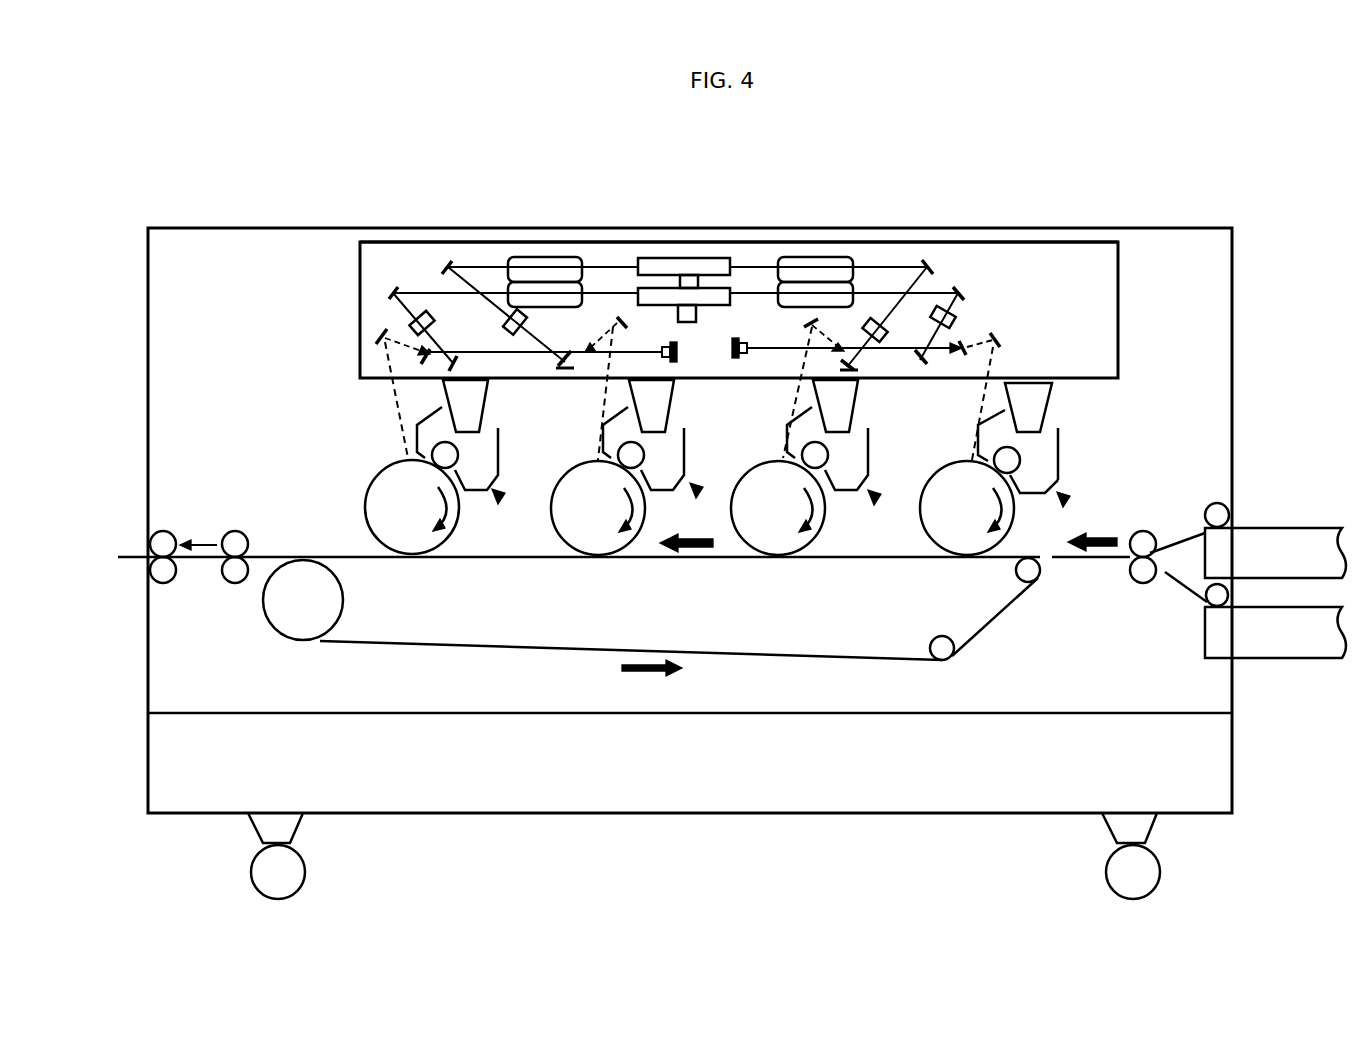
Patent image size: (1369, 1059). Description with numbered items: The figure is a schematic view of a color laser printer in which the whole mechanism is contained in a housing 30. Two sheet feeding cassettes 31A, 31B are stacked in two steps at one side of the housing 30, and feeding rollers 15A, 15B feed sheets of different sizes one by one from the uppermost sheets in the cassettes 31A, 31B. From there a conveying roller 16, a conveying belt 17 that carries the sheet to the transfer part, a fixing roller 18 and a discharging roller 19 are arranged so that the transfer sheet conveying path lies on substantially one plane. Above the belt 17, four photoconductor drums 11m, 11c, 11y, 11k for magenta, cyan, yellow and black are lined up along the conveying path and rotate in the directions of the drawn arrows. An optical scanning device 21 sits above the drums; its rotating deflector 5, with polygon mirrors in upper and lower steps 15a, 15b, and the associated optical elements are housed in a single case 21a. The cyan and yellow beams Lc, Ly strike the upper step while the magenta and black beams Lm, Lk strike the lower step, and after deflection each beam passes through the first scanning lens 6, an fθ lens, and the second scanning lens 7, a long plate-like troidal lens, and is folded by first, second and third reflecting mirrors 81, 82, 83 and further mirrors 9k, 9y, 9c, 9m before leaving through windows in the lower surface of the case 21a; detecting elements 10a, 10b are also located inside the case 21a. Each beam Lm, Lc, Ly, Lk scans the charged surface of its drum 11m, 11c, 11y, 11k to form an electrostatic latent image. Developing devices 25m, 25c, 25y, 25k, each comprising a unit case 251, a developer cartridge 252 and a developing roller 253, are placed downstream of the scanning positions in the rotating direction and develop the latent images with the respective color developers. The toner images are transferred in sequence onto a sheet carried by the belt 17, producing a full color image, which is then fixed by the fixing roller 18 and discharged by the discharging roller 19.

The rotating deflector 5 is at (704, 223).
The upper polygon mirror stage 15a is at (660, 267).
The lower polygon mirror stage 15b is at (718, 288).
The first scanning lens 6 is at (557, 283).
The second scanning lens 7 is at (410, 321).
The first reflecting mirror 81 is at (440, 260).
The second reflecting mirror 82 is at (457, 367).
The third reflecting mirror 83 is at (378, 333).
The second reflecting mirror for black 9k is at (425, 363).
The second reflecting mirror for yellow 9y is at (567, 357).
The second reflecting mirror for cyan 9c is at (840, 360).
The second reflecting mirror for magenta 9m is at (962, 350).
The synchronization detection sensor 10a is at (745, 340).
The synchronization detection sensor 10b is at (660, 350).
The laser beam for black Lk is at (425, 293).
The laser beam for yellow Ly is at (474, 265).
The laser beam for cyan Lc is at (887, 267).
The laser beam for magenta Lm is at (958, 290).
The photoconductor drum for black 11k is at (370, 498).
The photoconductor drum for yellow 11y is at (562, 477).
The photoconductor drum for cyan 11c is at (743, 473).
The photoconductor drum for magenta 11m is at (933, 480).
The optical scanning device 21 is at (1142, 288).
The case 21a is at (1055, 242).
The developing device for black 25k is at (500, 500).
The developing device for yellow 25y is at (698, 494).
The developing device for cyan 25c is at (876, 501).
The developing device for magenta 25m is at (1065, 503).
The unit case 251 is at (1063, 440).
The developer cartridge 252 is at (1040, 397).
The developing roller 253 is at (1053, 477).
The conveying belt 17 is at (710, 558).
The conveying roller 16 is at (1135, 578).
The fixing roller 18 is at (236, 530).
The discharging roller 19 is at (168, 530).
The feeding roller 15A is at (1215, 505).
The feeding roller 15B is at (1208, 600).
The sheet feeding cassette 31A is at (1300, 530).
The sheet feeding cassette 31B is at (1300, 645).
The housing 30 is at (1232, 350).